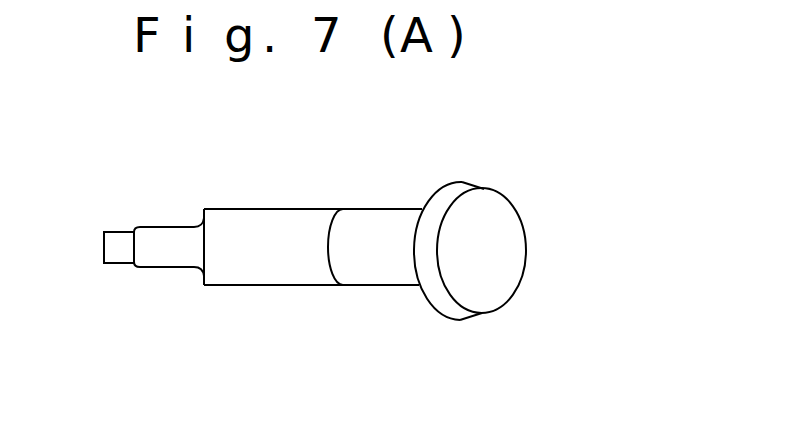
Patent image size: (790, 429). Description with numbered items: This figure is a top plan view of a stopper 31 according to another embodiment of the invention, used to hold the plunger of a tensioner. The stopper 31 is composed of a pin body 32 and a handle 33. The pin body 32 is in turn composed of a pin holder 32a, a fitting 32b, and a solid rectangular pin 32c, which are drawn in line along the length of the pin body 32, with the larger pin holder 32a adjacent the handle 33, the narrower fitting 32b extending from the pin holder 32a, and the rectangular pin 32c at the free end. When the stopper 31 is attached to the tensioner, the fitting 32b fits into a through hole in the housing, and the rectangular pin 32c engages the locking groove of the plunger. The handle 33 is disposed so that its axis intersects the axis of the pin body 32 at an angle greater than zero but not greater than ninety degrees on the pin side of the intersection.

The stopper 31 is at (310, 242).
The pin body 32 is at (308, 313).
The pin holder 32a is at (248, 271).
The fitting 32b is at (167, 238).
The solid rectangular pin 32c is at (118, 252).
The handle 33 is at (390, 191).